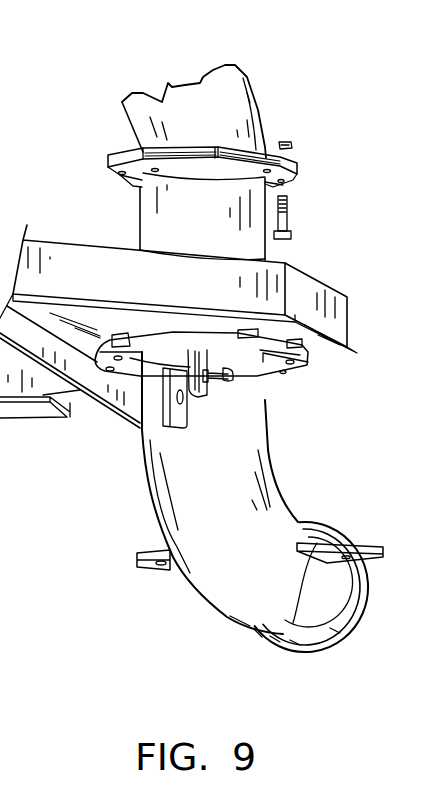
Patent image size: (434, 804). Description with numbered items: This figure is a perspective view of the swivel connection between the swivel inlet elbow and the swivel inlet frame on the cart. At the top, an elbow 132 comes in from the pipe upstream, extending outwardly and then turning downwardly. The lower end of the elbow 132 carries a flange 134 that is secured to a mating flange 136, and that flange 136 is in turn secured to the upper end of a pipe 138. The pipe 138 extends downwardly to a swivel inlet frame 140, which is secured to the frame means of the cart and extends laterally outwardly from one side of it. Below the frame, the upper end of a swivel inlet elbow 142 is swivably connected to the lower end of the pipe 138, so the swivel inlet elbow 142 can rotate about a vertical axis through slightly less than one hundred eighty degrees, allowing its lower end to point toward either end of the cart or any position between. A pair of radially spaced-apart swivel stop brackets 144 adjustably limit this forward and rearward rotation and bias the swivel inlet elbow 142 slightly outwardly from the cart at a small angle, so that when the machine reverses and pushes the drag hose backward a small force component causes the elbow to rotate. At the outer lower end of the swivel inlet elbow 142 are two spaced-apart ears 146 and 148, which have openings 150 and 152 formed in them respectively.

The elbow 132 is at (257, 98).
The flange 134 is at (242, 147).
The flange 136 is at (293, 185).
The pipe 138 is at (192, 233).
The swivel inlet frame 140 is at (350, 327).
The swivel inlet elbow 142 is at (168, 467).
The swivel stop bracket 144 is at (300, 373).
The ear 146 is at (317, 543).
The ear 148 is at (143, 557).
The opening 150 is at (358, 600).
The opening 152 is at (160, 570).